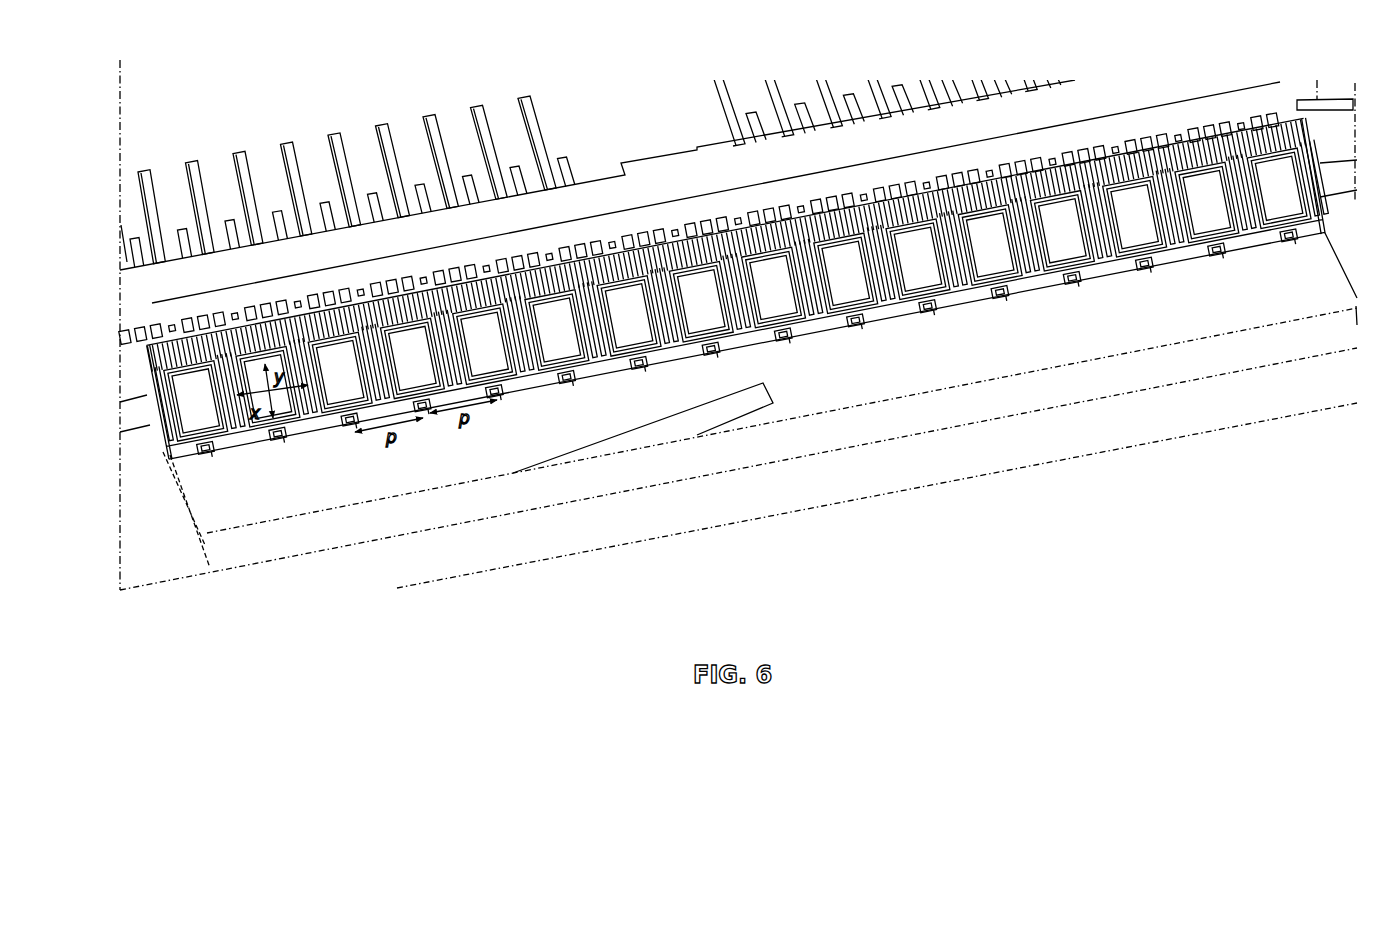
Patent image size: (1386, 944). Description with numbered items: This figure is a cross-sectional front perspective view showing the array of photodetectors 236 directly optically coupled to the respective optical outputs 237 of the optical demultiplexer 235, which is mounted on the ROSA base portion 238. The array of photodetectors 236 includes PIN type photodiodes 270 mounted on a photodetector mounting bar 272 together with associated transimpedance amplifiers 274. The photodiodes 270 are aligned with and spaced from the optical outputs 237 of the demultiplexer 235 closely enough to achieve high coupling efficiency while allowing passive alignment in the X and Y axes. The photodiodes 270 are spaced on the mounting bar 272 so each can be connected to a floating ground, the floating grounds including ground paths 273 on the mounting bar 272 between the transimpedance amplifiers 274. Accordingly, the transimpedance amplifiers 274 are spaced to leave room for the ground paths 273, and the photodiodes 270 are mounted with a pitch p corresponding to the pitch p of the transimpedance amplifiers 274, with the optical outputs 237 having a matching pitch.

The demultiplexer 235 is at (205, 543).
The array of photodetectors 236 is at (389, 465).
The optical outputs 237 is at (210, 453).
The ROSA base portion 238 is at (665, 521).
The photodiodes 270 is at (203, 452).
The photodetector mounting bar 272 is at (163, 450).
The ground paths 273 is at (153, 370).
The transimpedance amplifiers 274 is at (186, 400).